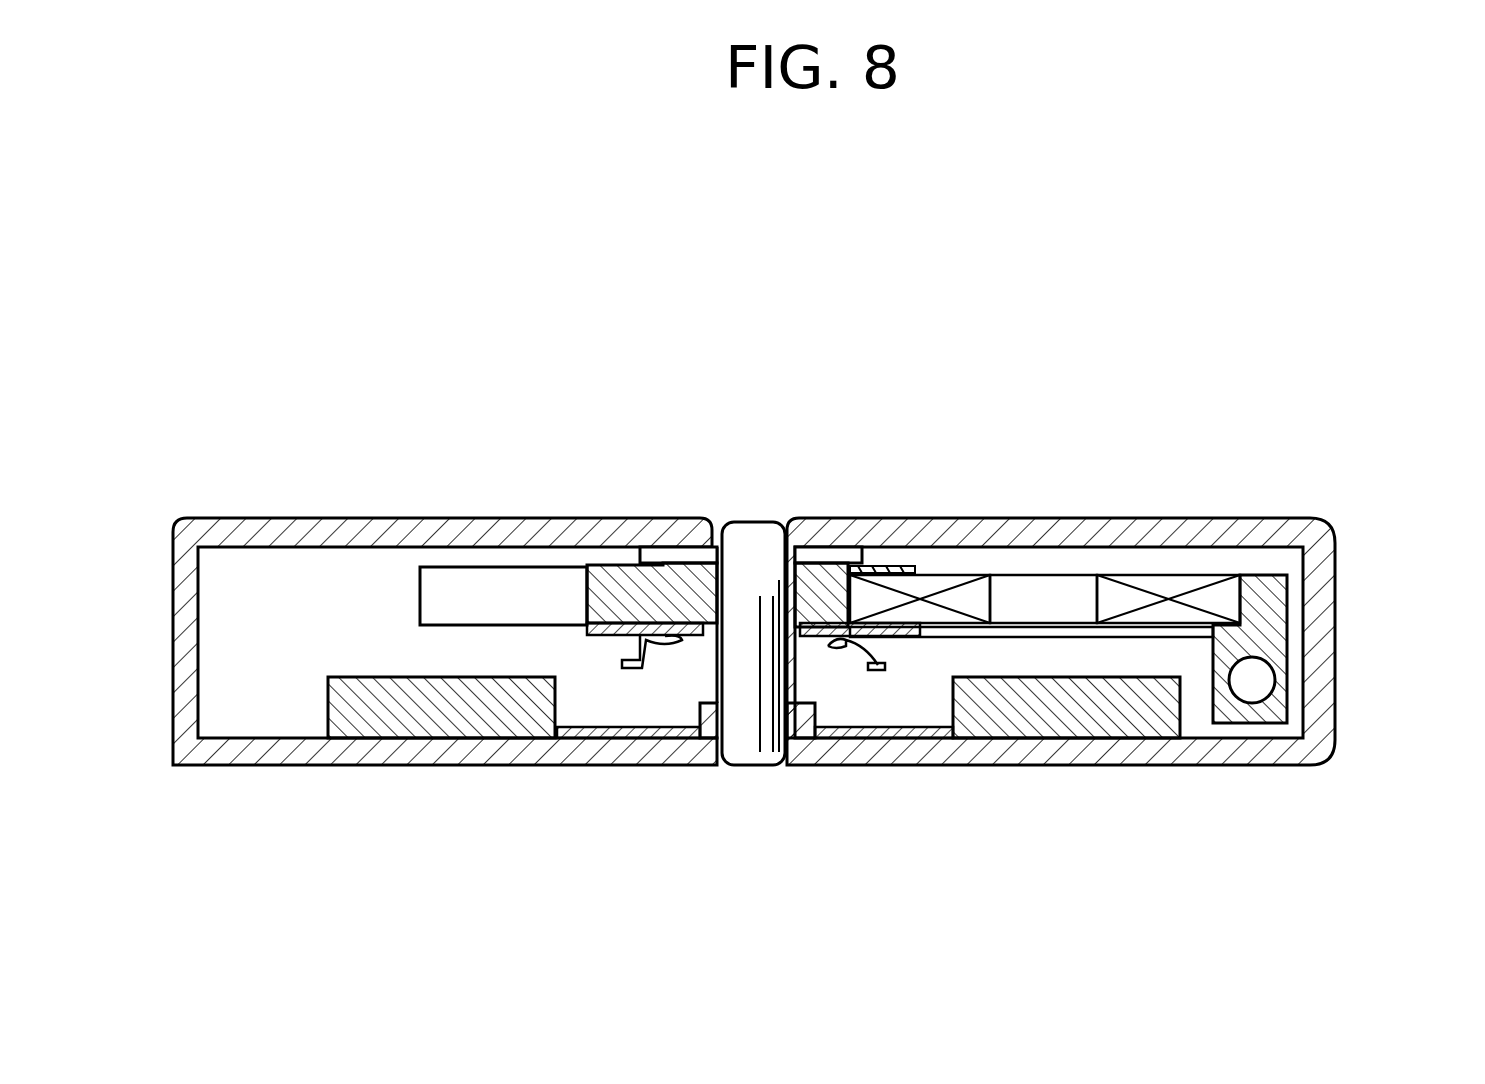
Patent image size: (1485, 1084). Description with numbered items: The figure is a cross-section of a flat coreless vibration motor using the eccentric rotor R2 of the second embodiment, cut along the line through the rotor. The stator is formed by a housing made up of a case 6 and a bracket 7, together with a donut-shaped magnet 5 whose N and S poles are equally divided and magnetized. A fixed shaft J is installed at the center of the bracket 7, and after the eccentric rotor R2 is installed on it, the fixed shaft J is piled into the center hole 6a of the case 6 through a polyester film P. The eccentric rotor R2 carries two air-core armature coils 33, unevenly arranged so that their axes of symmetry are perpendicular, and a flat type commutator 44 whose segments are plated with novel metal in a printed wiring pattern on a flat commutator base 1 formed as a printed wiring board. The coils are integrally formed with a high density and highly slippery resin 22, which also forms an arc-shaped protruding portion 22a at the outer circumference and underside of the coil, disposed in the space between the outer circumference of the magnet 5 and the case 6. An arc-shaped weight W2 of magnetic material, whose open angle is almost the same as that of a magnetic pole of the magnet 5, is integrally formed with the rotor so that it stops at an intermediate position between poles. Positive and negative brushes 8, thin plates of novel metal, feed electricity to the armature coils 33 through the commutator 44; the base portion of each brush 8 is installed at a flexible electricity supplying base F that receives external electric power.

The flat commutator base 1 is at (1145, 637).
The magnet 5 is at (462, 718).
The case 6 is at (602, 537).
The center hole 6a is at (720, 520).
The bracket 7 is at (1012, 750).
The brushes 8 is at (645, 642).
The high density and highly slippery resin 22 is at (492, 580).
The arc-shaped protruding portion 22a is at (1287, 603).
The air-core armature coils 33 is at (1183, 582).
The flat type commutator 44 is at (612, 632).
The flexible electricity supplying base F is at (925, 720).
The fixed shaft J is at (754, 535).
The polyester film P is at (866, 522).
The eccentric rotor R2 is at (1090, 568).
The arc-shaped weight W2 is at (1250, 683).